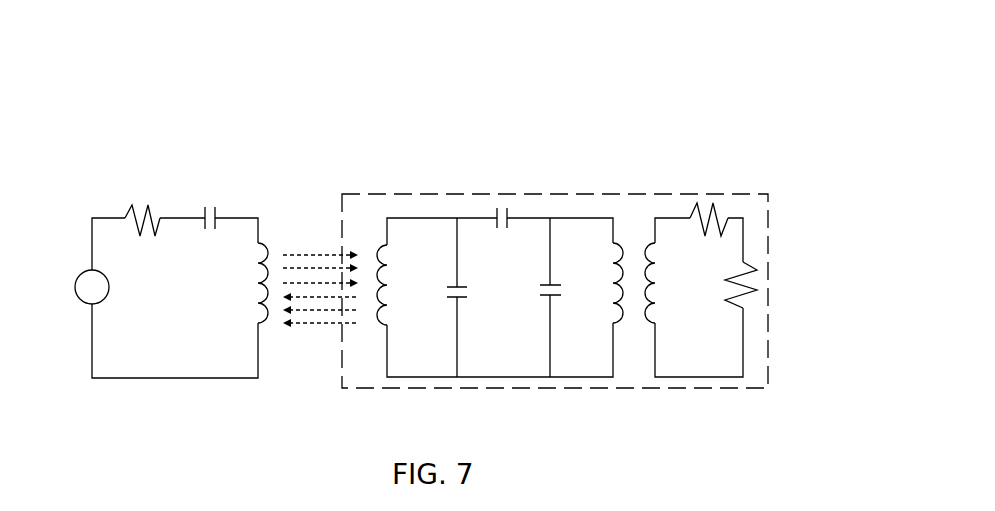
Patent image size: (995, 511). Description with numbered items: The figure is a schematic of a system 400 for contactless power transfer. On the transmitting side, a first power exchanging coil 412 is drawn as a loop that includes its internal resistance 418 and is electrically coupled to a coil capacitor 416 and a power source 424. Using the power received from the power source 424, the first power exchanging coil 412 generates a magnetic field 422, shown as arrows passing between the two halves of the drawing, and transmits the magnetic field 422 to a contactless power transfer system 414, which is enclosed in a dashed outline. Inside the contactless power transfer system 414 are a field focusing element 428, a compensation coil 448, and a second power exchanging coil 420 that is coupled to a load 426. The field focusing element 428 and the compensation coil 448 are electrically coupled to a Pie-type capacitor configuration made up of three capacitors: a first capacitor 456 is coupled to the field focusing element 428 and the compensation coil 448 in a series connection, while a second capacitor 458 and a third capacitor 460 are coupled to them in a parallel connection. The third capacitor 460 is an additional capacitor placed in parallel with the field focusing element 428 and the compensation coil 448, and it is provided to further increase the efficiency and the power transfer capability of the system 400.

The system 400 is at (660, 95).
The first power exchanging coil 412 is at (103, 212).
The contactless power transfer system 414 is at (575, 185).
The coil capacitor 416 is at (218, 211).
The internal resistance 418 is at (156, 204).
The second power exchanging coil 420 is at (670, 203).
The magnetic field 422 is at (290, 254).
The power source 424 is at (110, 284).
The load 426 is at (738, 300).
The field focusing element 428 is at (383, 290).
The compensation coil 448 is at (616, 284).
The first capacitor 456 is at (508, 214).
The second capacitor 458 is at (448, 286).
The third capacitor 460 is at (545, 286).